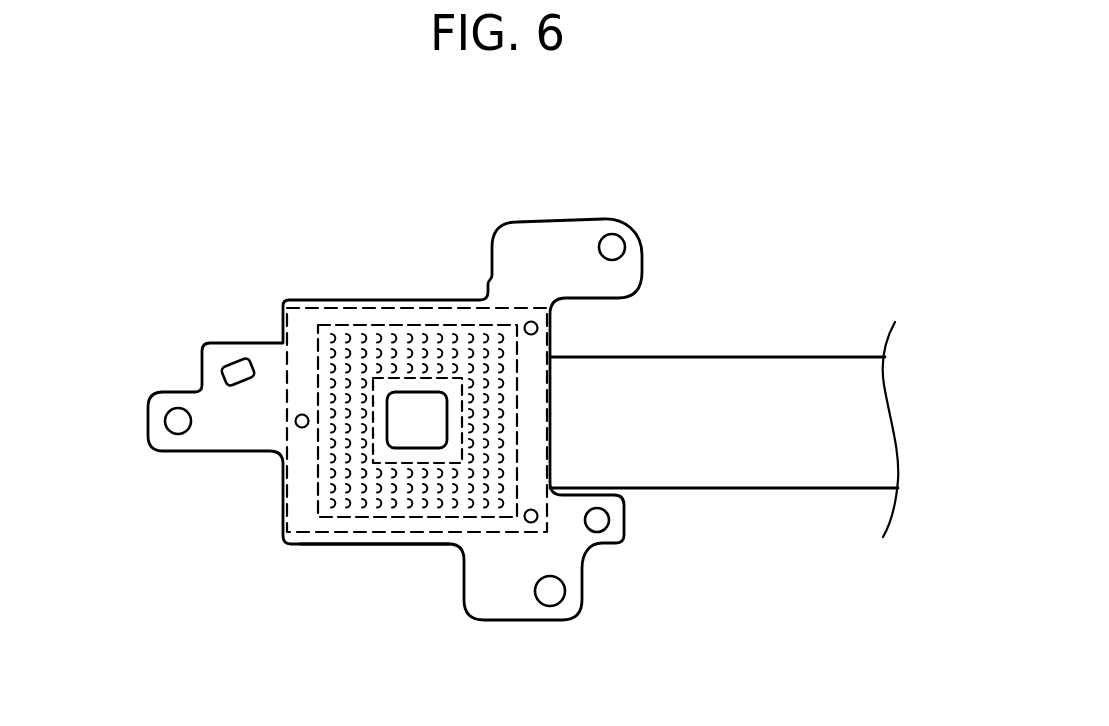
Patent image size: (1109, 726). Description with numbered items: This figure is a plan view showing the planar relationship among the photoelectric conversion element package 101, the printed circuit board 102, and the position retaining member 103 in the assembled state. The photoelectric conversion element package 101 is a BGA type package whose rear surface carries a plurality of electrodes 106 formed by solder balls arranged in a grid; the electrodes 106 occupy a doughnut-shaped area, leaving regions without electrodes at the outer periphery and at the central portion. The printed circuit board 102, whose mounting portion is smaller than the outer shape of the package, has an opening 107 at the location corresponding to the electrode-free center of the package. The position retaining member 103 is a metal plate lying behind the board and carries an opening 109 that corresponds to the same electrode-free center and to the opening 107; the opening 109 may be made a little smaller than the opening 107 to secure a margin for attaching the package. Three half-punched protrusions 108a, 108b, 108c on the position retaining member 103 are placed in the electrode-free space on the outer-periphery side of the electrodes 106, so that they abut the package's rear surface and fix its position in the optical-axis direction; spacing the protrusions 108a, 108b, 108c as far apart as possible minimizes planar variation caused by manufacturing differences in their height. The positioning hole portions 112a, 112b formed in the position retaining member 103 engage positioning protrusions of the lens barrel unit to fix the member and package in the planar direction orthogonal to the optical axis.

The photoelectric conversion element package 101 is at (288, 505).
The printed circuit board 102 is at (728, 400).
The position retaining member 103 is at (382, 545).
The electrodes 106 is at (335, 458).
The opening 107 is at (387, 388).
The protrusion 108a is at (298, 414).
The protrusion 108b is at (531, 321).
The protrusion 108c is at (537, 516).
The opening 109 is at (423, 402).
The positioning hole portion 112a is at (609, 520).
The positioning hole portion 112b is at (228, 367).